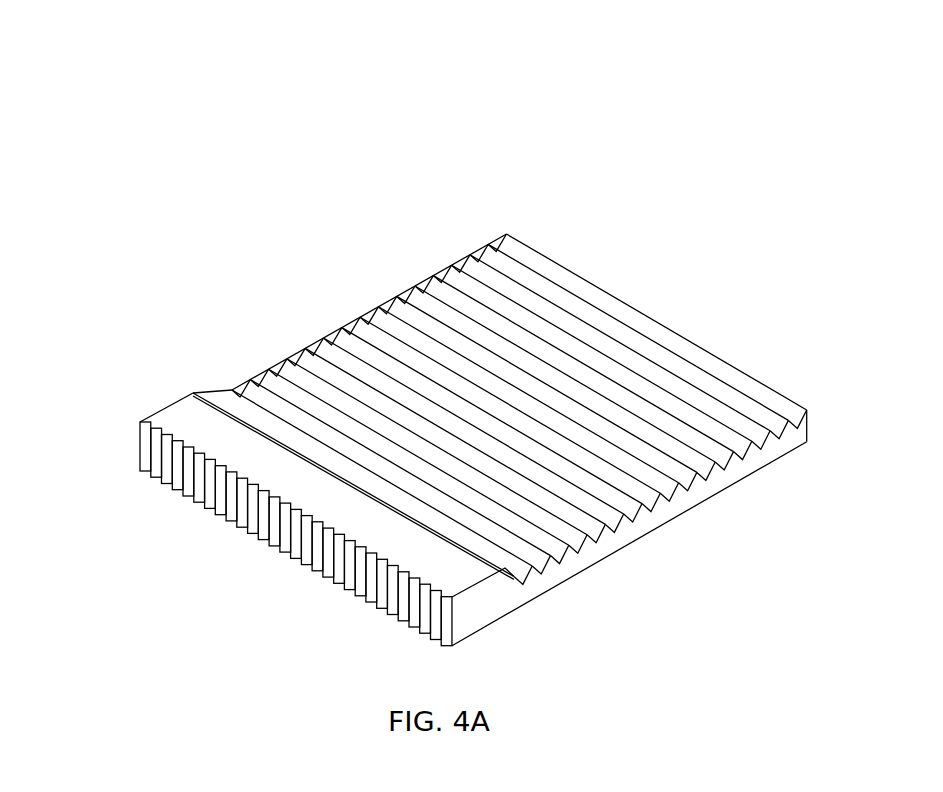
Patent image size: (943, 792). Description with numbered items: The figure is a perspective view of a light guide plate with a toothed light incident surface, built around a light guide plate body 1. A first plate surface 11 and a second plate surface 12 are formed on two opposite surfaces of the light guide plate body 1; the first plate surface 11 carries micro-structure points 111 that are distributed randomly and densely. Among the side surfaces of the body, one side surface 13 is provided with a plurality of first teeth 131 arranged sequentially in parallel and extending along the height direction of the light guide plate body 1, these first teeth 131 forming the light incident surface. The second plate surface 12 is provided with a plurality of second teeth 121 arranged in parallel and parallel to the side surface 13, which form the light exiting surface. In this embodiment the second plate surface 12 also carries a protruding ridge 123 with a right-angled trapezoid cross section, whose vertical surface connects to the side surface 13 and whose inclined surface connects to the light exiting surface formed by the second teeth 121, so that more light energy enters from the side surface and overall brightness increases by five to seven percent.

The light guide plate body 1 is at (342, 312).
The first plate surface 11 is at (698, 360).
The micro-structure points 111 is at (688, 466).
The second plate surface 12 is at (573, 310).
The second teeth 121 is at (469, 263).
The protruding ridge 123 is at (198, 417).
The side surface 13 is at (140, 423).
The first teeth 131 is at (340, 565).